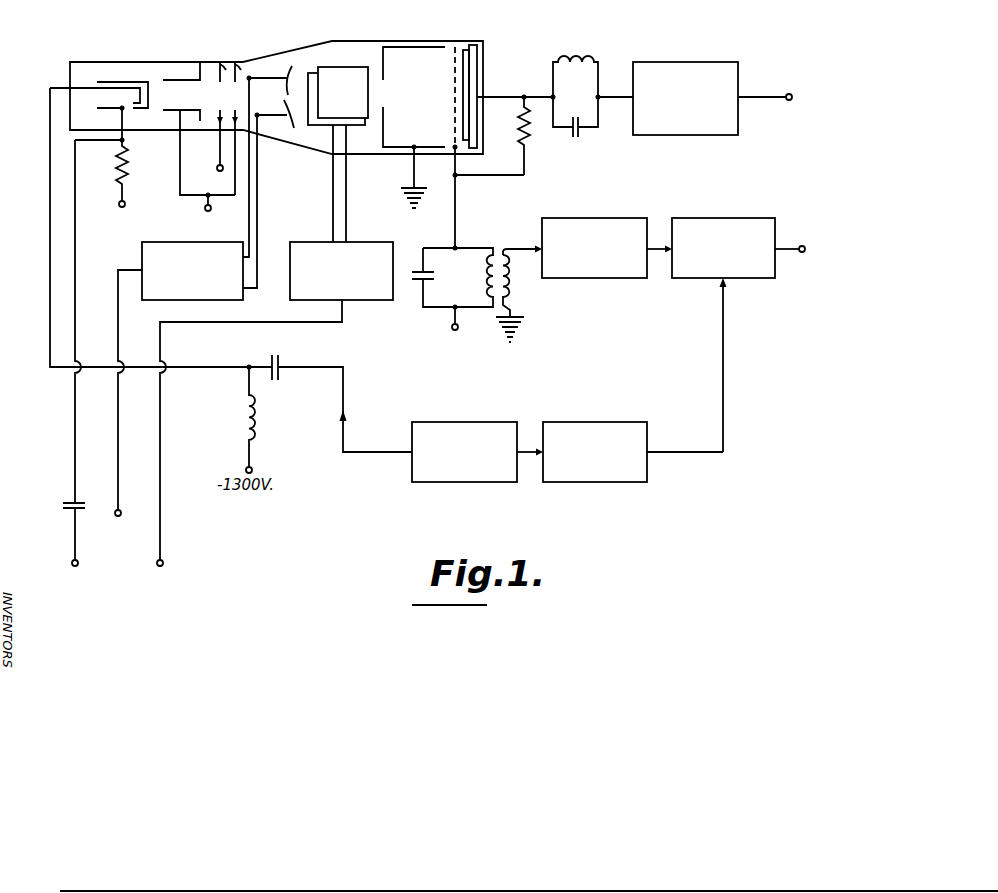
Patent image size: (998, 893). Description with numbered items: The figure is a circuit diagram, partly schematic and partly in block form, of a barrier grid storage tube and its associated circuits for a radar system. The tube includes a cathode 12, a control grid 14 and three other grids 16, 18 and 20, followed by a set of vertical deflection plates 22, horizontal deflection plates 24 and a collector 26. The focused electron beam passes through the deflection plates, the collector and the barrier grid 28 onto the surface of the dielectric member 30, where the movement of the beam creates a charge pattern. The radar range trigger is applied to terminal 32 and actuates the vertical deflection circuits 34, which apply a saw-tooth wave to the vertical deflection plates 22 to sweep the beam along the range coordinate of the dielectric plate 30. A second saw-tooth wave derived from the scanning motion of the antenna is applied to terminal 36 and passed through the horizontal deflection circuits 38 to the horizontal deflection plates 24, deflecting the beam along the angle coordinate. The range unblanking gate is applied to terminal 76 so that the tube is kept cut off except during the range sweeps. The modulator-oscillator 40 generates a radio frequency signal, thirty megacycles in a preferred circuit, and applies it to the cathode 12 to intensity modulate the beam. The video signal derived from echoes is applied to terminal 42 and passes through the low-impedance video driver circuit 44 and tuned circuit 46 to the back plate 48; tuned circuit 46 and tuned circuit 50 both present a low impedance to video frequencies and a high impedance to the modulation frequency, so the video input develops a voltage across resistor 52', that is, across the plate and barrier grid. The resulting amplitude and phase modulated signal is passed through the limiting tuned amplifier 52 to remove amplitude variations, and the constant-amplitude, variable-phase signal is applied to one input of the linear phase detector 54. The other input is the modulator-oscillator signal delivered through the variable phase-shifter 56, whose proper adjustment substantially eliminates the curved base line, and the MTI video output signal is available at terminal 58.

The cathode 12 is at (78, 83).
The control grid 14 is at (127, 81).
The grid 16 is at (180, 81).
The grid 18 is at (221, 70).
The grid 20 is at (237, 70).
The vertical deflection plates 22 is at (285, 99).
The horizontal deflection plates 24 is at (326, 72).
The collector 26 is at (426, 47).
The barrier grid 28 is at (453, 70).
The dielectric member 30 is at (467, 46).
The back plate 48 is at (480, 47).
The resistor 52' is at (542, 136).
The tuned circuit 46 is at (588, 102).
The low-impedance video driver circuit 44 is at (703, 62).
The terminal 42 is at (788, 93).
The tuned circuit 50 is at (470, 279).
The limiting tuned amplifier 52 is at (607, 231).
The linear phase detector 54 is at (726, 218).
The terminal 58 is at (802, 246).
The vertical deflection circuits 34 is at (142, 252).
The horizontal deflection circuits 38 is at (352, 242).
The modulator-oscillator 40 is at (462, 422).
The variable phase-shifter 56 is at (605, 422).
The terminal 32 is at (120, 511).
The terminal 36 is at (163, 562).
The terminal 76 is at (72, 562).